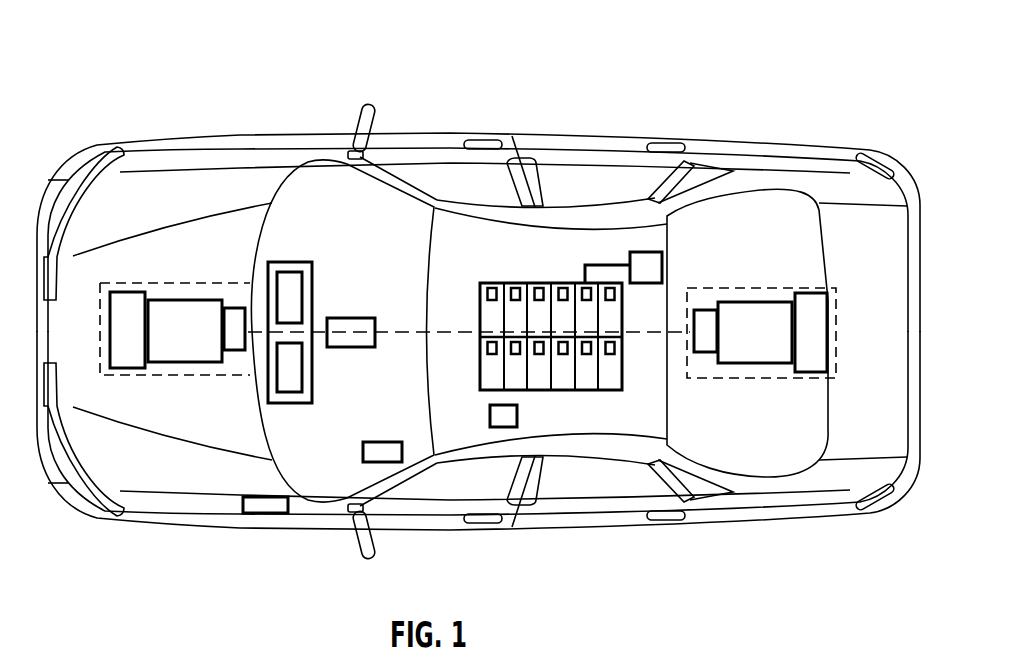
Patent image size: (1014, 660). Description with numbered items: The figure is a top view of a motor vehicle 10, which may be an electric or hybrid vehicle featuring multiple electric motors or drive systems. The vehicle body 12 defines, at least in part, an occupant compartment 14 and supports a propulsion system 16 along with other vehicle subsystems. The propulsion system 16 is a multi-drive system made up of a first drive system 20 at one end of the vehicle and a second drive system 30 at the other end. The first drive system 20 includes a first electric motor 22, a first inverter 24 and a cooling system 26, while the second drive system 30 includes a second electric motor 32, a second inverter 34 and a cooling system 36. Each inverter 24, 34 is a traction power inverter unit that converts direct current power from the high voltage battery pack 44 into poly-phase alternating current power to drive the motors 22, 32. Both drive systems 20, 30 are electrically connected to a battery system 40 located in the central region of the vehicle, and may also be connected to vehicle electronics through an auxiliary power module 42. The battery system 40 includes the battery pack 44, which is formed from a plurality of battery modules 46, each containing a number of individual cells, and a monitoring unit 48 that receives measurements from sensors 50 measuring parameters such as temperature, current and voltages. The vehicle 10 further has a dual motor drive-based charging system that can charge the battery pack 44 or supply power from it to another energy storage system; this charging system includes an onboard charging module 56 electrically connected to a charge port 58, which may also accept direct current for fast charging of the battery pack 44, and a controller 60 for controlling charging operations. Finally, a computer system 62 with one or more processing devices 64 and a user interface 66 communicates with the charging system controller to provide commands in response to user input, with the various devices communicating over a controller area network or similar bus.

The motor vehicle 10 is at (90, 40).
The vehicle body 12 is at (525, 125).
The occupant compartment 14 is at (628, 500).
The propulsion system 16 is at (178, 428).
The first drive system 20 is at (173, 311).
The first electric motor 22 is at (190, 300).
The first inverter 24 is at (235, 308).
The cooling system 26 is at (127, 370).
The second drive system 30 is at (790, 324).
The second electric motor 32 is at (755, 302).
The second inverter 34 is at (706, 352).
The cooling system 36 is at (828, 330).
The battery system 40 is at (627, 416).
The auxiliary power module 42 is at (490, 416).
The battery pack 44 is at (527, 337).
The battery modules 46 is at (512, 283).
The monitoring unit 48 is at (665, 272).
The sensors 50 is at (563, 283).
The onboard charging module 56 is at (363, 450).
The charge port 58 is at (268, 497).
The controller 60 is at (362, 318).
The computer system 62 is at (290, 247).
The processing devices 64 is at (303, 297).
The user interface 66 is at (303, 367).